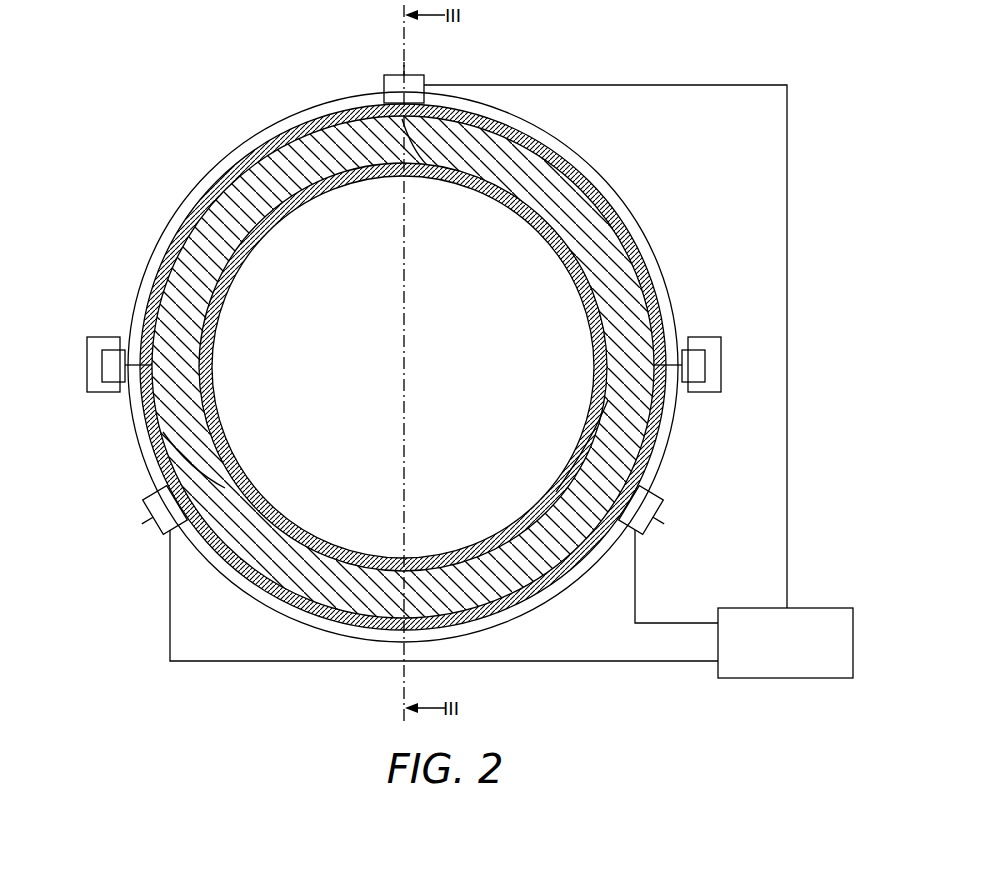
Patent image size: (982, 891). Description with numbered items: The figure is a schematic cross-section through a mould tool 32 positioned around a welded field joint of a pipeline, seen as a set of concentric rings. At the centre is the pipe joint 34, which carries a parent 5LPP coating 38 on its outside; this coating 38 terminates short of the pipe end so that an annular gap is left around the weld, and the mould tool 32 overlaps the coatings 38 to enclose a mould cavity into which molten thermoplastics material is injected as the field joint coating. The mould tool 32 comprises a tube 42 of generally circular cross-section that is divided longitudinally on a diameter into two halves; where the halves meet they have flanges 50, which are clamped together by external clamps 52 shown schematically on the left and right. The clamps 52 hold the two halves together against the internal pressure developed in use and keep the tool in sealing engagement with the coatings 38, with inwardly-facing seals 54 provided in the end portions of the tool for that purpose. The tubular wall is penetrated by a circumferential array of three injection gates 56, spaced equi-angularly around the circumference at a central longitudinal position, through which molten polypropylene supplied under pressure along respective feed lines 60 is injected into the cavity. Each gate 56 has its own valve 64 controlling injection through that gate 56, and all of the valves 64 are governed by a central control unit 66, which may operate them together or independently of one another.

The mould tool 32 is at (138, 124).
The pipe joint 34 is at (232, 267).
The 5LPP coating 38 is at (190, 258).
The tube 42 is at (280, 143).
The flange 50 is at (109, 350).
The external clamp 52 is at (87, 365).
The inwardly-facing seal 54 is at (637, 217).
The injection gate 56 is at (428, 168).
The feed line 60 is at (403, 70).
The valve 64 is at (383, 88).
The central control unit 66 is at (745, 608).